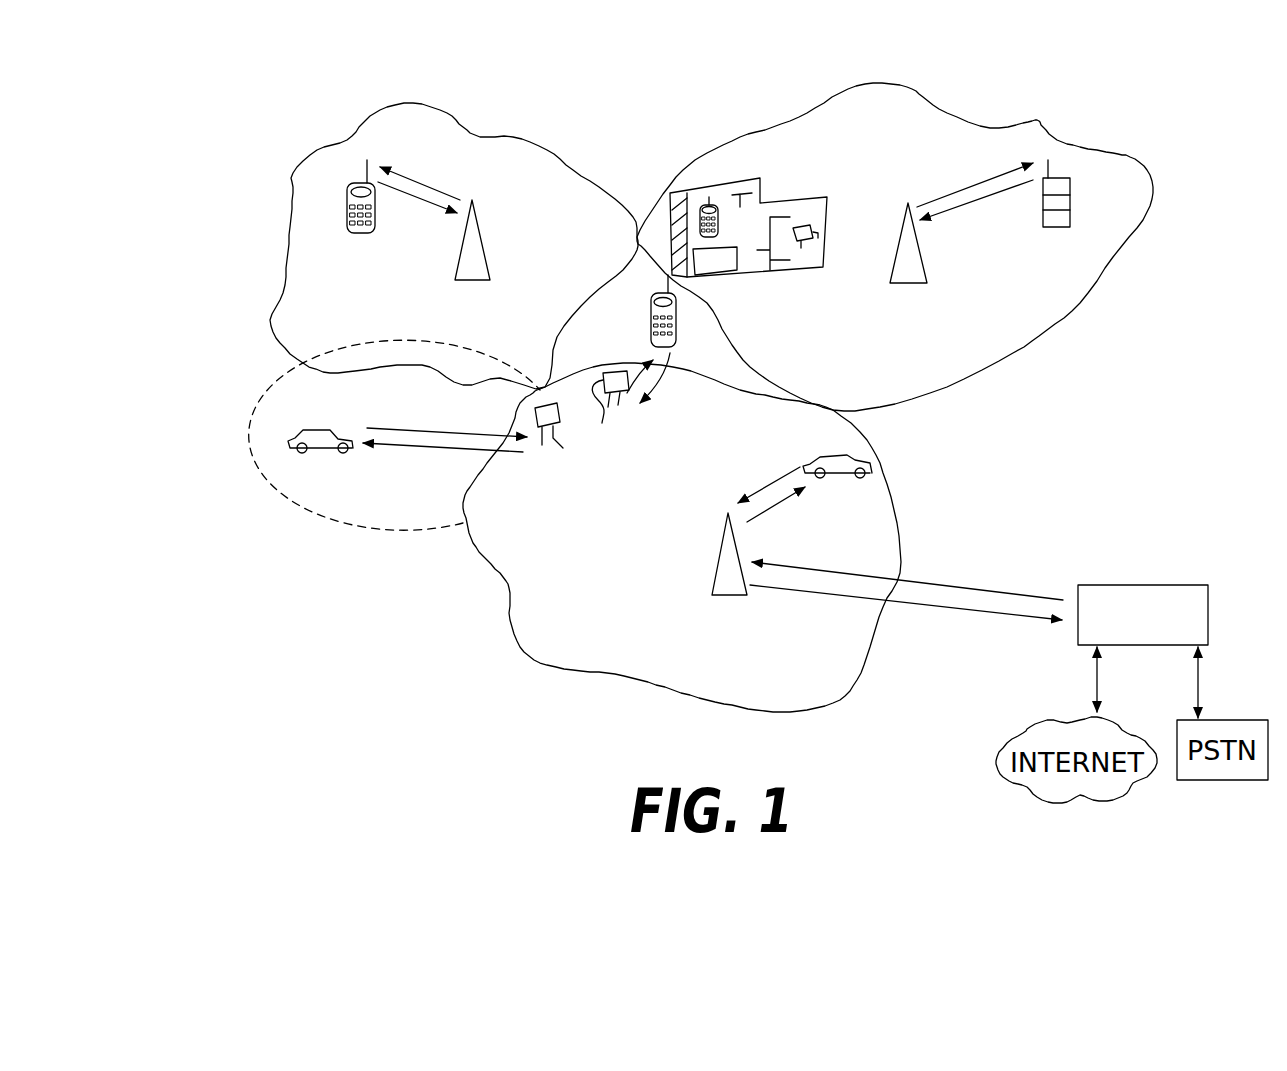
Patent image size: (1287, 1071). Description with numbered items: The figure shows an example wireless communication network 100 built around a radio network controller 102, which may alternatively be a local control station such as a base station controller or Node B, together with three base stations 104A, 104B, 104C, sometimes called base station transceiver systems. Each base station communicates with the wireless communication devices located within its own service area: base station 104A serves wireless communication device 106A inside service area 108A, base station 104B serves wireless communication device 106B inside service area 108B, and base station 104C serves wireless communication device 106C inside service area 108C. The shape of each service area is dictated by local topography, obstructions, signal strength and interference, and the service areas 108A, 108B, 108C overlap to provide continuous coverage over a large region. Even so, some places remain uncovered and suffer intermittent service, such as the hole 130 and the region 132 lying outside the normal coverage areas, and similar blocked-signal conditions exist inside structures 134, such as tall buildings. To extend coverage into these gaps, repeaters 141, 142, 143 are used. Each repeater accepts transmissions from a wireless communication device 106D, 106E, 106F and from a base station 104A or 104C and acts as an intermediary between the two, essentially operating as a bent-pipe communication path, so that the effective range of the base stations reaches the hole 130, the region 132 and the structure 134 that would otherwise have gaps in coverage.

The wireless communication network 100 is at (258, 163).
The radio network controller 102 is at (1146, 585).
The base station 104A is at (730, 598).
The base station 104B is at (480, 230).
The base station 104C is at (903, 287).
The wireless communication device 106A is at (826, 455).
The wireless communication device 106B is at (361, 235).
The wireless communication device 106C is at (1055, 228).
The wireless communication device 106D is at (317, 430).
The wireless communication device 106E is at (677, 327).
The wireless communication device 106F is at (720, 197).
The service area 108A is at (607, 673).
The service area 108B is at (477, 135).
The service area 108C is at (1148, 170).
The hole 130 is at (667, 339).
The uncovered region 132 is at (302, 503).
The structure 134 is at (770, 272).
The repeater 141 is at (561, 441).
The repeater 142 is at (611, 411).
The repeater 143 is at (803, 226).